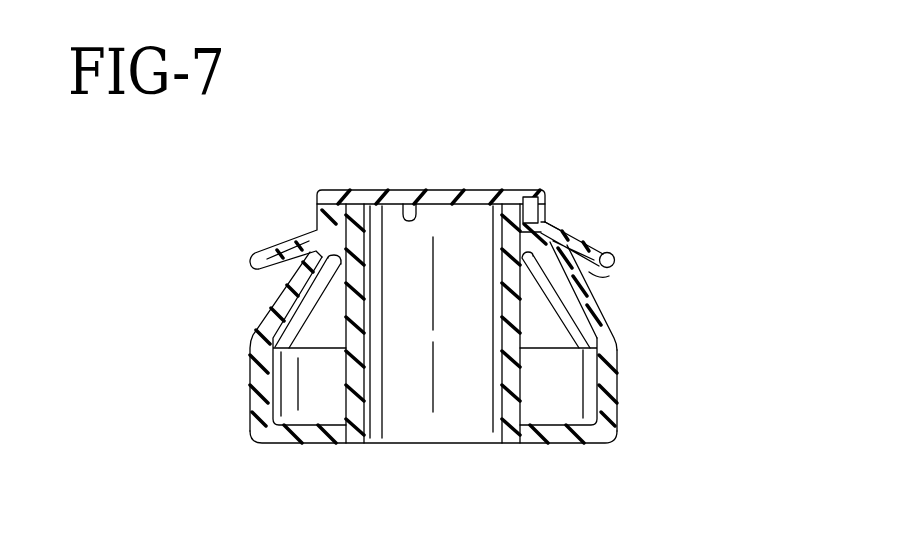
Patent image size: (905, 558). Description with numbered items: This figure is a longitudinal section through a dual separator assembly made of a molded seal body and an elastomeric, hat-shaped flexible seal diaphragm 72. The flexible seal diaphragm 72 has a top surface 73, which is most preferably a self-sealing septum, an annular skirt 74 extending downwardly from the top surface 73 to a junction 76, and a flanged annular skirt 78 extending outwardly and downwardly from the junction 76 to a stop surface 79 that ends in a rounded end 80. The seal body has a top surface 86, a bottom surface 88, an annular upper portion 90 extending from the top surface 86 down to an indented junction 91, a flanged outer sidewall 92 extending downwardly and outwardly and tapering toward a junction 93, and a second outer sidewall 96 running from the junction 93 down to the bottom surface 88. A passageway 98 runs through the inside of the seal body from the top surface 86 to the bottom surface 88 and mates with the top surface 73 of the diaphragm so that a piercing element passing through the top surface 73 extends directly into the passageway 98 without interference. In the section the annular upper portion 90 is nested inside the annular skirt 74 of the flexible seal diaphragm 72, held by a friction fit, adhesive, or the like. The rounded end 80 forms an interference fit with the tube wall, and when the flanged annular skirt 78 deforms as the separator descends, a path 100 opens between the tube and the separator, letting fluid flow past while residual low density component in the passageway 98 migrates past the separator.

The flexible seal diaphragm 72 is at (529, 193).
The top surface 73 is at (357, 191).
The annular skirt 74 is at (540, 208).
The junction 76 is at (558, 224).
The flanged annular skirt 78 is at (589, 245).
The stop surface 79 is at (606, 277).
The rounded end 80 is at (615, 260).
The top surface 86 is at (410, 201).
The bottom surface 88 is at (541, 436).
The annular upper portion 90 is at (541, 219).
The indented junction 91 is at (320, 214).
The flanged outer sidewall 92 is at (591, 296).
The junction 93 is at (618, 341).
The second outer sidewall 96 is at (604, 370).
The passageway 98 is at (403, 424).
The path 100 is at (300, 393).